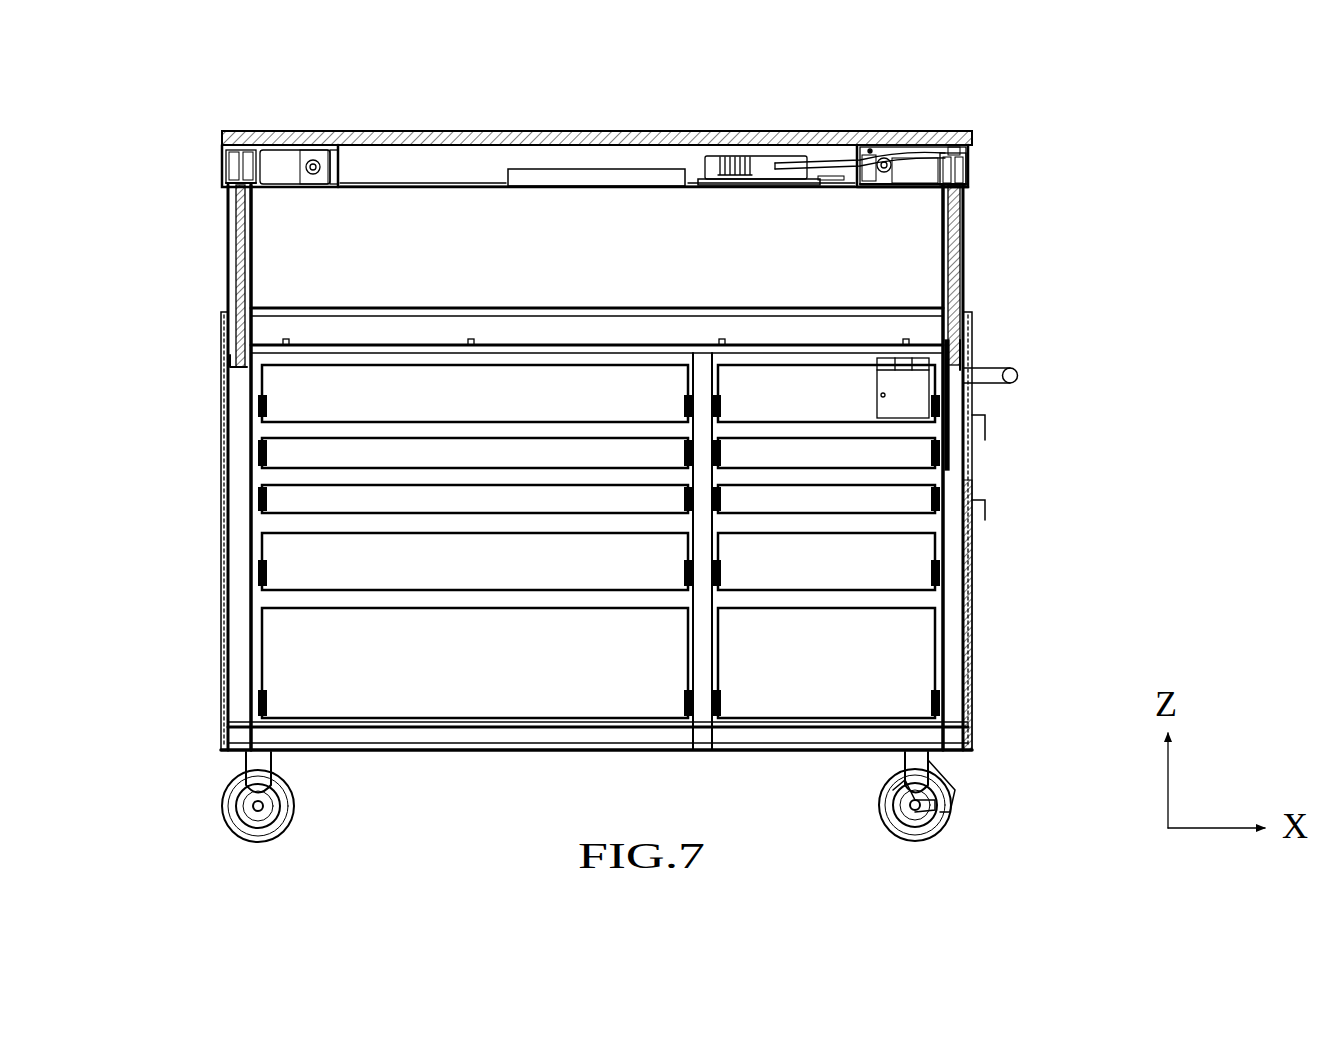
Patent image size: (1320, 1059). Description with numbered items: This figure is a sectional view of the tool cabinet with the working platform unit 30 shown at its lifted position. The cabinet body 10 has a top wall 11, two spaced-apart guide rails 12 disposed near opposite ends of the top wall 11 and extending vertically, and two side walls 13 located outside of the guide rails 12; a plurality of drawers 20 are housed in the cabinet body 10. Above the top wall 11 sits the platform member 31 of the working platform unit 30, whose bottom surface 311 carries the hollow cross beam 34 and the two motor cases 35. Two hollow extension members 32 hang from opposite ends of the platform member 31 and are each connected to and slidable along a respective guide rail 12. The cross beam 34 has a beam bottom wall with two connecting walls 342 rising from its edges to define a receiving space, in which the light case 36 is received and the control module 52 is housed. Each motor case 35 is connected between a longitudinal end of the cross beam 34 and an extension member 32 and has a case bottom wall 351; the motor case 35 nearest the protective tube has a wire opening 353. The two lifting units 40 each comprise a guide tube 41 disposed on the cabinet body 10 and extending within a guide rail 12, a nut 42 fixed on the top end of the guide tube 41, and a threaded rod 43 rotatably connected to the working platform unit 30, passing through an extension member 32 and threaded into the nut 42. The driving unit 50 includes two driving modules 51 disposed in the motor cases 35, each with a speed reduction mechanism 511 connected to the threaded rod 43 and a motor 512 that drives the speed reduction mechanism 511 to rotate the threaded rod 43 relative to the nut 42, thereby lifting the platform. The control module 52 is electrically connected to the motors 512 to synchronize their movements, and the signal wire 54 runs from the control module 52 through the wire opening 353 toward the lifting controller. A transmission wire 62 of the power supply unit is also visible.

The cabinet body 10 is at (595, 558).
The top wall 11 is at (356, 346).
The guide rails 12 is at (225, 590).
The side walls 13 is at (225, 690).
The drawers 20 is at (462, 700).
The working platform unit 30 is at (440, 126).
The platform member 31 is at (480, 129).
The bottom surface 311 is at (517, 143).
The extension members 32 is at (232, 242).
The cross beam 34 is at (468, 188).
The connecting walls 342 is at (370, 165).
The motor cases 35 is at (278, 188).
The case bottom wall 351 is at (913, 178).
The wire opening 353 is at (937, 150).
The light case 36 is at (600, 168).
The lifting units 40 is at (229, 490).
The guide tube 41 is at (958, 548).
The nut 42 is at (950, 338).
The threaded rod 43 is at (958, 282).
The driving unit 50 is at (752, 150).
The driving modules 51 is at (268, 160).
The speed reduction mechanism 511 is at (966, 158).
The motor 512 is at (966, 172).
The control module 52 is at (712, 158).
The signal wire 54 is at (838, 164).
The transmission wire 62 is at (832, 170).